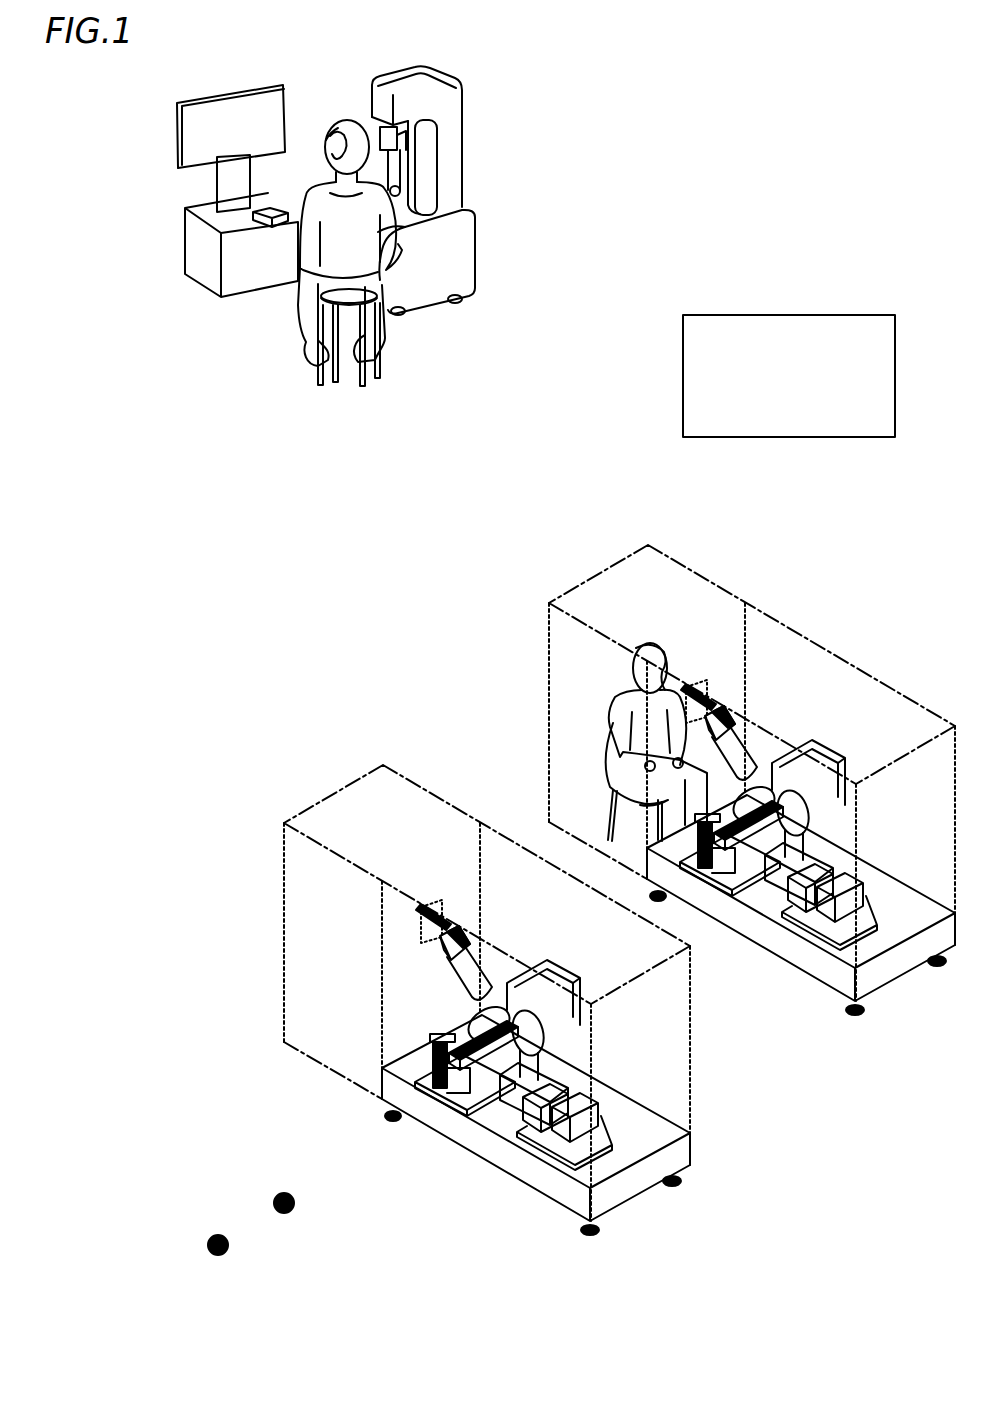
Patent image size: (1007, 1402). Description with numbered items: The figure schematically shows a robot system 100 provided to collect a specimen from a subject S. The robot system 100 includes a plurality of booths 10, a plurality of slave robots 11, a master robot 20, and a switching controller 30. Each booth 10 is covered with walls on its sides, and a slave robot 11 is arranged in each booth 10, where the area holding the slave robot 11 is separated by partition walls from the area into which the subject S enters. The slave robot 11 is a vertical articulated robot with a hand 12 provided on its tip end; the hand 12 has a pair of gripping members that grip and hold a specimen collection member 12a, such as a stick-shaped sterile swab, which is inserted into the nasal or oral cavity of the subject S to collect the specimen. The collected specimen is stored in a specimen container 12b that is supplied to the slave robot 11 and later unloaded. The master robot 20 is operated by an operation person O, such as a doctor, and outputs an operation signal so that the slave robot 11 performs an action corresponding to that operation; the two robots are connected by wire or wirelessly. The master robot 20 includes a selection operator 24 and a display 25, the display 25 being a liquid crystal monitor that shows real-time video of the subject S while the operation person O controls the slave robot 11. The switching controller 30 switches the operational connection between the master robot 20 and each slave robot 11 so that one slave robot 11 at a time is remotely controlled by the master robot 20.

The robot system 100 is at (849, 85).
The booth 10 is at (783, 583).
The slave robot 11 is at (767, 752).
The hand 12 is at (725, 700).
The specimen collection member 12a is at (687, 692).
The specimen container 12b is at (718, 890).
The master robot 20 is at (482, 103).
The selection operator 24 is at (280, 208).
The display 25 is at (278, 103).
The switching controller 30 is at (880, 303).
The operation person O is at (347, 115).
The subject S is at (620, 670).